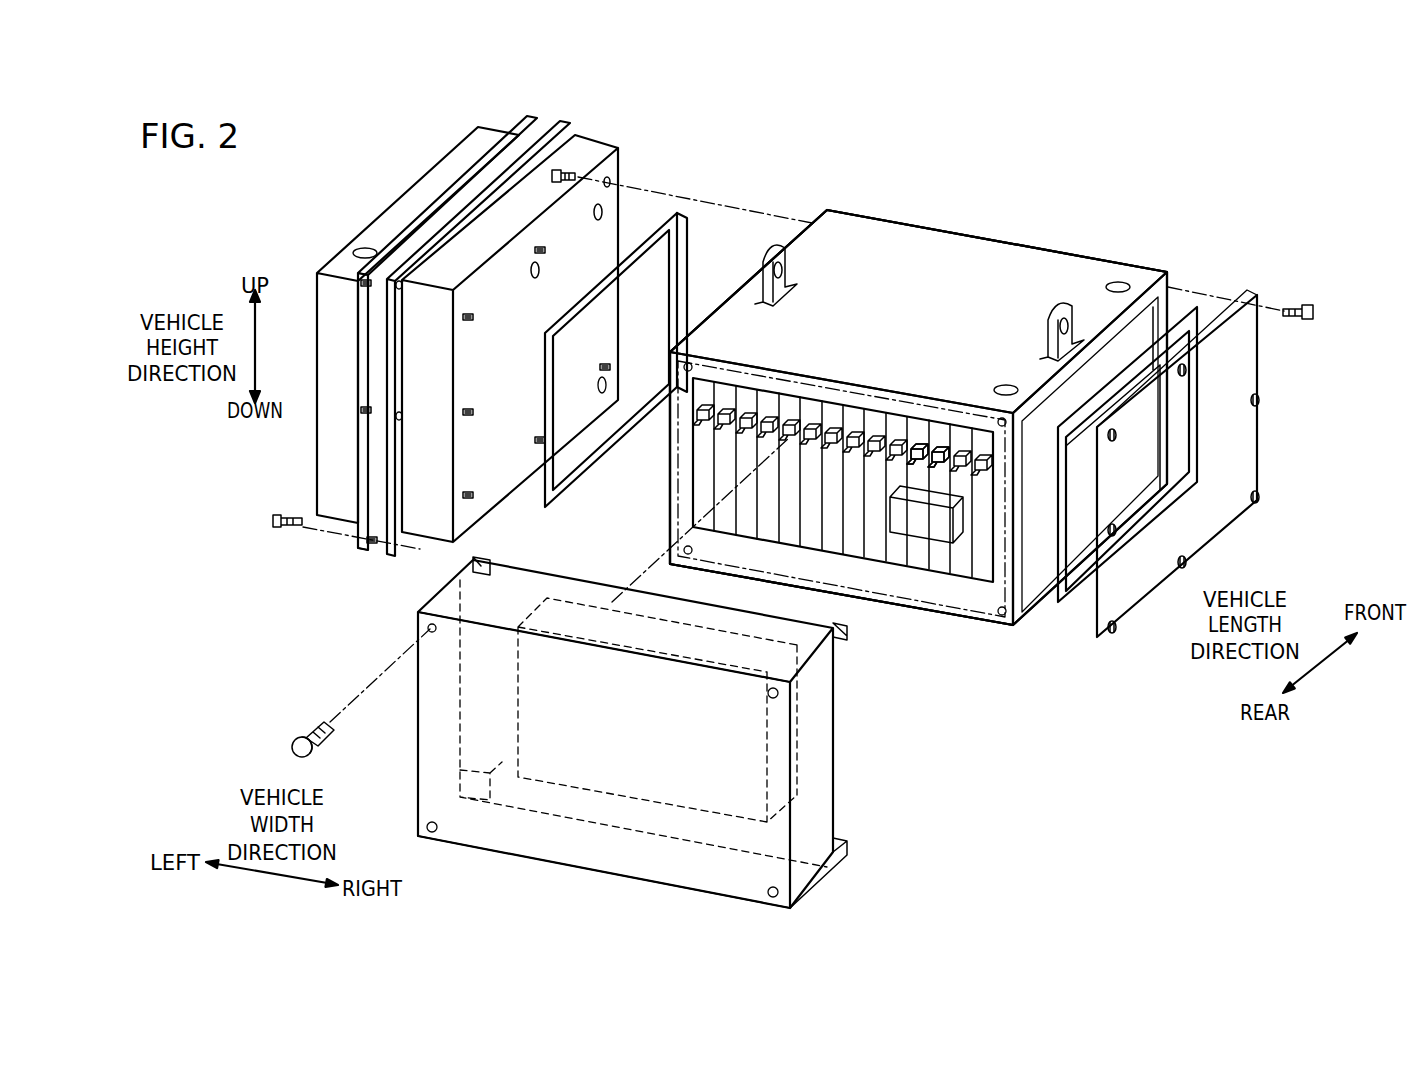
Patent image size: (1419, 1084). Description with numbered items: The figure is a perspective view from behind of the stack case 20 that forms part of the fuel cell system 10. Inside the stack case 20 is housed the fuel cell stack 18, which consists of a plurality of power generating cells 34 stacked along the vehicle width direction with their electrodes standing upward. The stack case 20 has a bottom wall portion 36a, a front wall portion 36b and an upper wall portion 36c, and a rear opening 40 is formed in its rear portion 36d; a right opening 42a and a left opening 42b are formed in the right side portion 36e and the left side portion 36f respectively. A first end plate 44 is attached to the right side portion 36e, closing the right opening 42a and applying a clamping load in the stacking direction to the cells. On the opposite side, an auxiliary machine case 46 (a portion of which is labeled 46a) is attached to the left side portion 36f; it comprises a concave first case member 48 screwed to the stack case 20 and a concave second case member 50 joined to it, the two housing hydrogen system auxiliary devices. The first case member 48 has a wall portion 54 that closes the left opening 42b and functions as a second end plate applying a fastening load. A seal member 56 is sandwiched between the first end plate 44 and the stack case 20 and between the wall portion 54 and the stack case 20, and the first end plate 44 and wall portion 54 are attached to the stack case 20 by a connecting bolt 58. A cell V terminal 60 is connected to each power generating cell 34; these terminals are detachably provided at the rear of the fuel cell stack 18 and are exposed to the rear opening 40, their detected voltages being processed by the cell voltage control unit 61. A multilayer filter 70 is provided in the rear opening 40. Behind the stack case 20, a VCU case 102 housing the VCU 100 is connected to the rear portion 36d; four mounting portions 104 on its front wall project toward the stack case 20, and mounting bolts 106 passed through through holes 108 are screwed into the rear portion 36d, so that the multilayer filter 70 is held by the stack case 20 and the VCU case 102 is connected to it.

The power control unit 10 is at (1163, 222).
The fuel cell stack 18 is at (735, 392).
The stack case 20 is at (1045, 245).
The power generating cells 34 is at (872, 408).
The bottom wall portion 36a is at (870, 600).
The front wall portion 36b is at (975, 243).
The upper wall portion 36c is at (866, 240).
The rear portion 36d is at (683, 506).
The right side portion 36e is at (1040, 590).
The left side portion 36f is at (731, 292).
The rear opening 40 is at (787, 403).
The right opening 42a is at (1103, 357).
The left opening 42b is at (800, 222).
The first end plate 44 is at (1237, 453).
The auxiliary machine case 46 is at (392, 92).
The front plate body 46a is at (388, 227).
The first case member 48 is at (530, 190).
The second case member 50 is at (485, 133).
The wall portion 54 is at (492, 478).
The seal member 56 is at (677, 213).
The connecting bolt 58 is at (578, 176).
The cell V terminal 60 is at (940, 440).
The cell voltage control unit 61 is at (940, 548).
The multilayer filter 70 is at (972, 618).
The VCU 100 is at (795, 743).
The VCU case 102 is at (430, 795).
The mounting portions 104 is at (478, 564).
The mounting bolts 106 is at (293, 745).
The through holes 108 is at (427, 627).